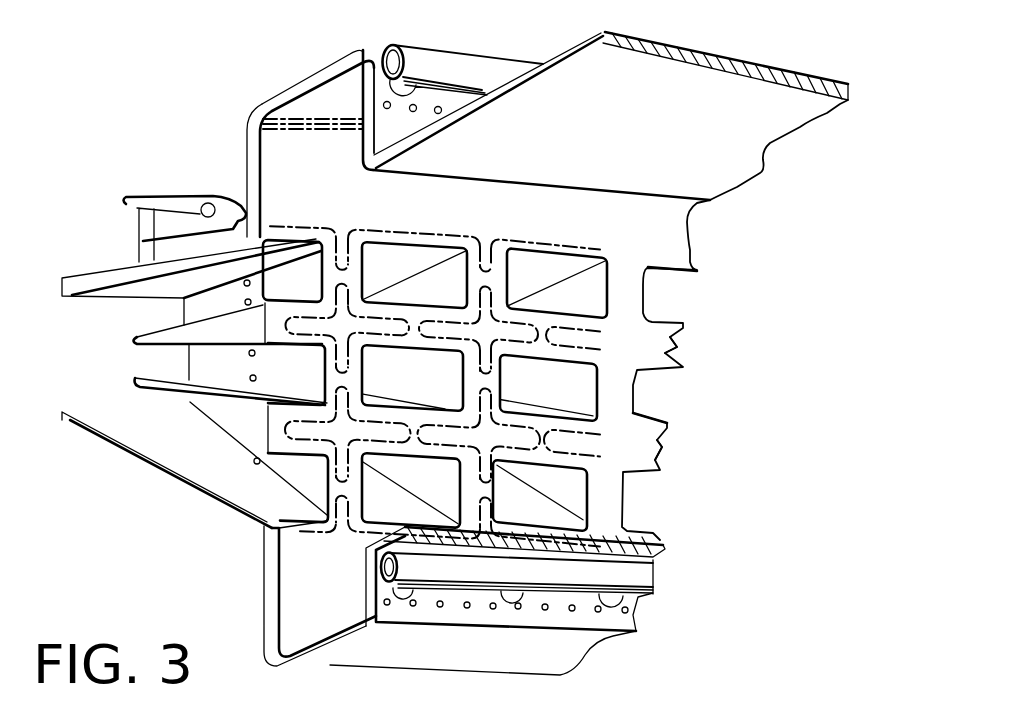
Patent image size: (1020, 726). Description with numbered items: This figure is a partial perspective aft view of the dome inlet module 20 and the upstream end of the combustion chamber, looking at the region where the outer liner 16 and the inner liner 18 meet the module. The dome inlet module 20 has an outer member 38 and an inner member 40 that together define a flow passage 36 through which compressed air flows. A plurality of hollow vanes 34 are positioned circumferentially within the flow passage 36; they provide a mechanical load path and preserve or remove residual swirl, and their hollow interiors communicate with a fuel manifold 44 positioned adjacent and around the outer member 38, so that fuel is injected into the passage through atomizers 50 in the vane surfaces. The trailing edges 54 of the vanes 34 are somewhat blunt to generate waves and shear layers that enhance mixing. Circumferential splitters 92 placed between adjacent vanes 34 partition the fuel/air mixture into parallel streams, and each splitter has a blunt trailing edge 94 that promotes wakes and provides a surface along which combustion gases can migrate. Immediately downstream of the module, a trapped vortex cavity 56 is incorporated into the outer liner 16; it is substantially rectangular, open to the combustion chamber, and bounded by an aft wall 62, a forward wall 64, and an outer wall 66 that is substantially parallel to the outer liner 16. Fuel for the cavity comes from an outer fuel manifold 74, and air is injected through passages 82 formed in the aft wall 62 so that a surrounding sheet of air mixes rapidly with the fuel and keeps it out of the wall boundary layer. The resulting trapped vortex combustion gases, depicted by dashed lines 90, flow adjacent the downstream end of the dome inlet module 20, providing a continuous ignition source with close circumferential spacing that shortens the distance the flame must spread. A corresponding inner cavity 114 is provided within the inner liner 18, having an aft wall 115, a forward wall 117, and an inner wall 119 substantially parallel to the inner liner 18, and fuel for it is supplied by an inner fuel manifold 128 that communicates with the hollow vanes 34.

The outer liner 16 is at (645, 116).
The inner liner 18 is at (667, 546).
The dome inlet module 20 is at (180, 195).
The hollow vanes 34 is at (197, 310).
The flow passage 36 is at (112, 372).
The outer member 38 is at (102, 270).
The inner member 40 is at (127, 454).
The fuel manifold 44 is at (215, 207).
The atomizers 50 is at (257, 354).
The trailing edges 54 is at (633, 302).
The trapped vortex cavity 56 is at (315, 139).
The aft wall 62 is at (355, 160).
The forward wall 64 is at (259, 179).
The outer wall 66 is at (325, 70).
The outer fuel manifold 74 is at (452, 62).
The air passages 82 is at (389, 110).
The trapped vortex combustion gases 90 is at (573, 241).
The circumferential splitters 92 is at (206, 335).
The trailing edge 94 is at (670, 357).
The inner cavity 114 is at (333, 621).
The aft wall 115 is at (380, 568).
The forward wall 117 is at (273, 597).
The inner wall 119 is at (330, 665).
The inner fuel manifold 128 is at (641, 579).